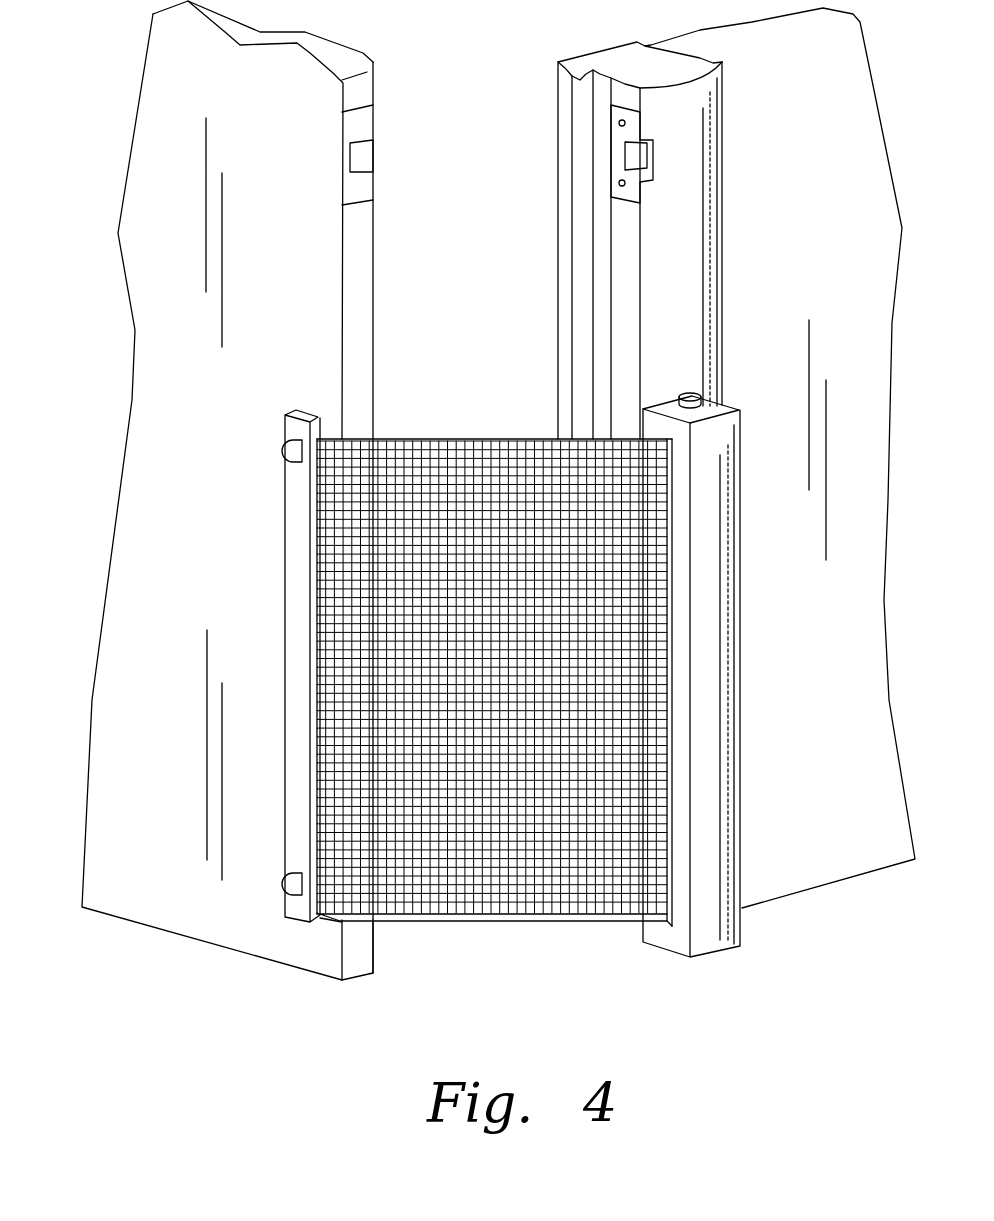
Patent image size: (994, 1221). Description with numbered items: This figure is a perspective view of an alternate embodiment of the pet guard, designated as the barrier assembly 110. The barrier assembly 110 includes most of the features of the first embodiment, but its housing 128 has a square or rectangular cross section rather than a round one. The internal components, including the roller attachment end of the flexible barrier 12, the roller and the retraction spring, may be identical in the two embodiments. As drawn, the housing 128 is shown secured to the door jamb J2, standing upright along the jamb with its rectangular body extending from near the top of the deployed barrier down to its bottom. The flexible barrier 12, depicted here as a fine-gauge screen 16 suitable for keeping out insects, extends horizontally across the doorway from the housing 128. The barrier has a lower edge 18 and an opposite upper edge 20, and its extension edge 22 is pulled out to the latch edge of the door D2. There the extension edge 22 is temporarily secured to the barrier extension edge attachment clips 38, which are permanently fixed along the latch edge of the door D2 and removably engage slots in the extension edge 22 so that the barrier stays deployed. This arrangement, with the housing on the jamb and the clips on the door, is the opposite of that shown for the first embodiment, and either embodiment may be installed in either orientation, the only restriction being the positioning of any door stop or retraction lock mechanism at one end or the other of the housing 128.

The door D2 is at (133, 412).
The door jamb J2 is at (565, 195).
The flexible barrier 12 is at (493, 423).
The screen 16 is at (388, 543).
The lower edge 18 is at (540, 922).
The upper edge 20 is at (420, 438).
The extension edge 22 is at (285, 618).
The barrier extension edge attachment clip 38 is at (289, 456).
The barrier assembly 110 is at (758, 714).
The housing 128 is at (726, 658).